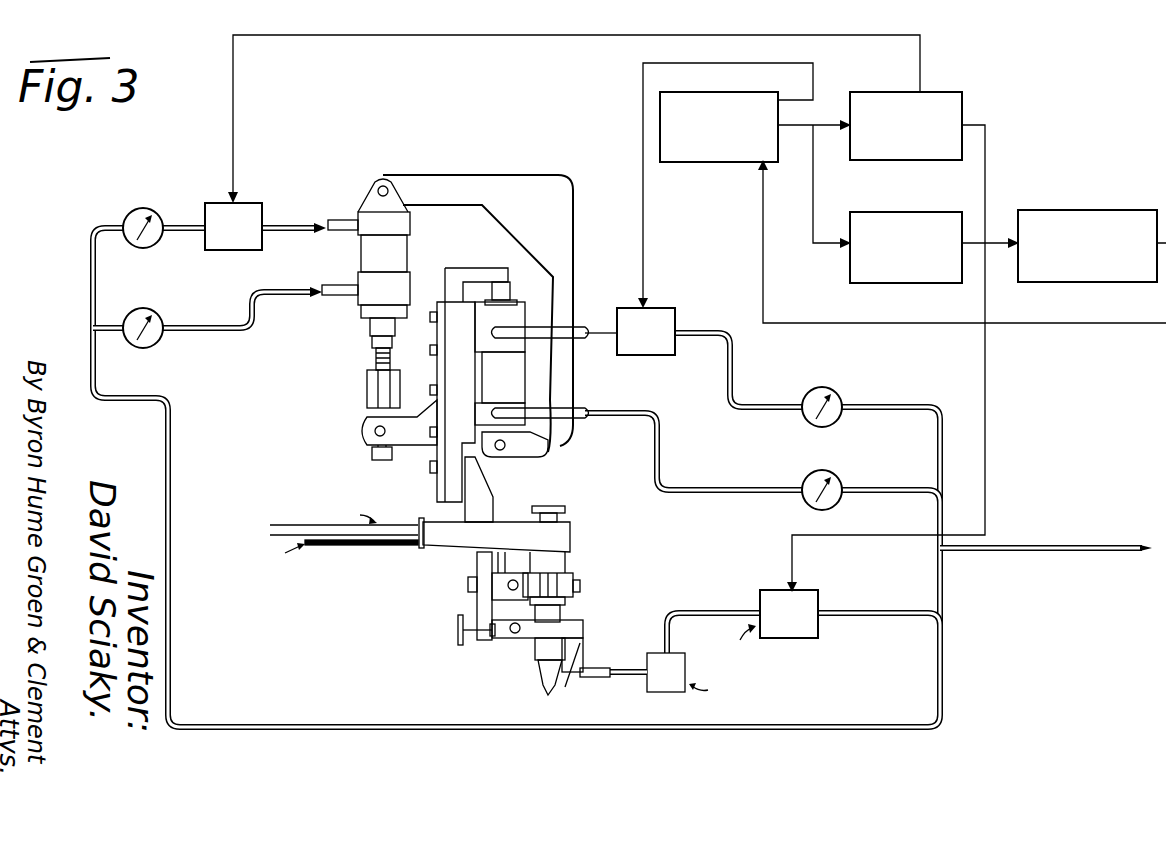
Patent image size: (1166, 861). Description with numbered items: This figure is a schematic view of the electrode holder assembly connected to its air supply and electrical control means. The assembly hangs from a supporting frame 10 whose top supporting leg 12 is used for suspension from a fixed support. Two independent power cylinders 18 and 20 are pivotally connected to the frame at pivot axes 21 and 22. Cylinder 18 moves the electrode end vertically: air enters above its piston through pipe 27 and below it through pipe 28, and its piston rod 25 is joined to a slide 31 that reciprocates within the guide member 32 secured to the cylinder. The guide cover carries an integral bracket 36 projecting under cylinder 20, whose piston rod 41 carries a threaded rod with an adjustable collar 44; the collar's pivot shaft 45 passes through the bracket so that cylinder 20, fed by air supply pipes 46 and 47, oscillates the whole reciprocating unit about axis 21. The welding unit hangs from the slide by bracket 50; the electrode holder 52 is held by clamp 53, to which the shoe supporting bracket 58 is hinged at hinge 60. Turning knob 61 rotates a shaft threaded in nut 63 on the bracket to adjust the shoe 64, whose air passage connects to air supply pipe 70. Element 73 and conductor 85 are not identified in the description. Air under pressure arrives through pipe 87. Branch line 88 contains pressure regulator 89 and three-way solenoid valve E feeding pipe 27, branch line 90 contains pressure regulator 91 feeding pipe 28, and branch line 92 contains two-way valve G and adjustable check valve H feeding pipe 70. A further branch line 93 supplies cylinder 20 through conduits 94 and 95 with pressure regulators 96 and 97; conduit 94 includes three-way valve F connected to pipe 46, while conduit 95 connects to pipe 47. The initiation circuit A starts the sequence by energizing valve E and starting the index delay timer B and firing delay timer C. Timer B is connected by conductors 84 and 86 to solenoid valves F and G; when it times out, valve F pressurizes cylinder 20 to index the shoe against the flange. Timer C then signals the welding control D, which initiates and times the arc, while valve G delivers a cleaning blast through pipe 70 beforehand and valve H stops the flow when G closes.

The supporting frame 10 is at (580, 205).
The top supporting leg 12 is at (457, 183).
The power cylinder 18 is at (512, 382).
The power cylinder 20 is at (395, 250).
The pivot axis 21 is at (503, 450).
The pivot axis 22 is at (382, 180).
The piston rod 25 is at (500, 288).
The pipe 27 is at (537, 330).
The pipe 28 is at (565, 418).
The slide 31 is at (447, 283).
The guide member 32 is at (452, 350).
The bracket 36 is at (415, 437).
The piston rod 41 is at (378, 332).
The adjustable collar 44 is at (375, 390).
The pivot shaft 45 is at (374, 431).
The air supply pipe 46 is at (335, 215).
The air supply pipe 47 is at (338, 296).
The bracket 50 is at (468, 570).
The electrode holder 52 is at (542, 668).
The clamp 53 is at (582, 576).
The shoe supporting bracket 58 is at (572, 622).
The hinge 60 is at (508, 588).
The knob 61 is at (458, 634).
The nut 63 is at (513, 636).
The shoe 64 is at (580, 650).
The air supply pipe 70 is at (590, 678).
The arm 73 is at (560, 535).
The conductor 84 is at (488, 38).
The electrical line 85 is at (643, 112).
The conductor 86 is at (987, 175).
The pipe 87 is at (1088, 546).
The branch line 88 is at (896, 407).
The pressure regulator 89 is at (818, 388).
The branch line 90 is at (896, 490).
The pressure regulator 91 is at (808, 474).
The branch line 92 is at (872, 612).
The branch line 93 is at (172, 462).
The conduit 94 is at (180, 222).
The conduit 95 is at (230, 333).
The pressure regulator 96 is at (133, 205).
The pressure regulator 97 is at (152, 340).
The initiation circuit A is at (719, 113).
The index delay timer B is at (906, 110).
The firing delay timer C is at (906, 233).
The welding control D is at (1087, 229).
The three-way solenoid valve E is at (632, 351).
The three-way solenoid valve F is at (224, 236).
The two-way valve G is at (764, 622).
The adjustable check valve H is at (743, 652).